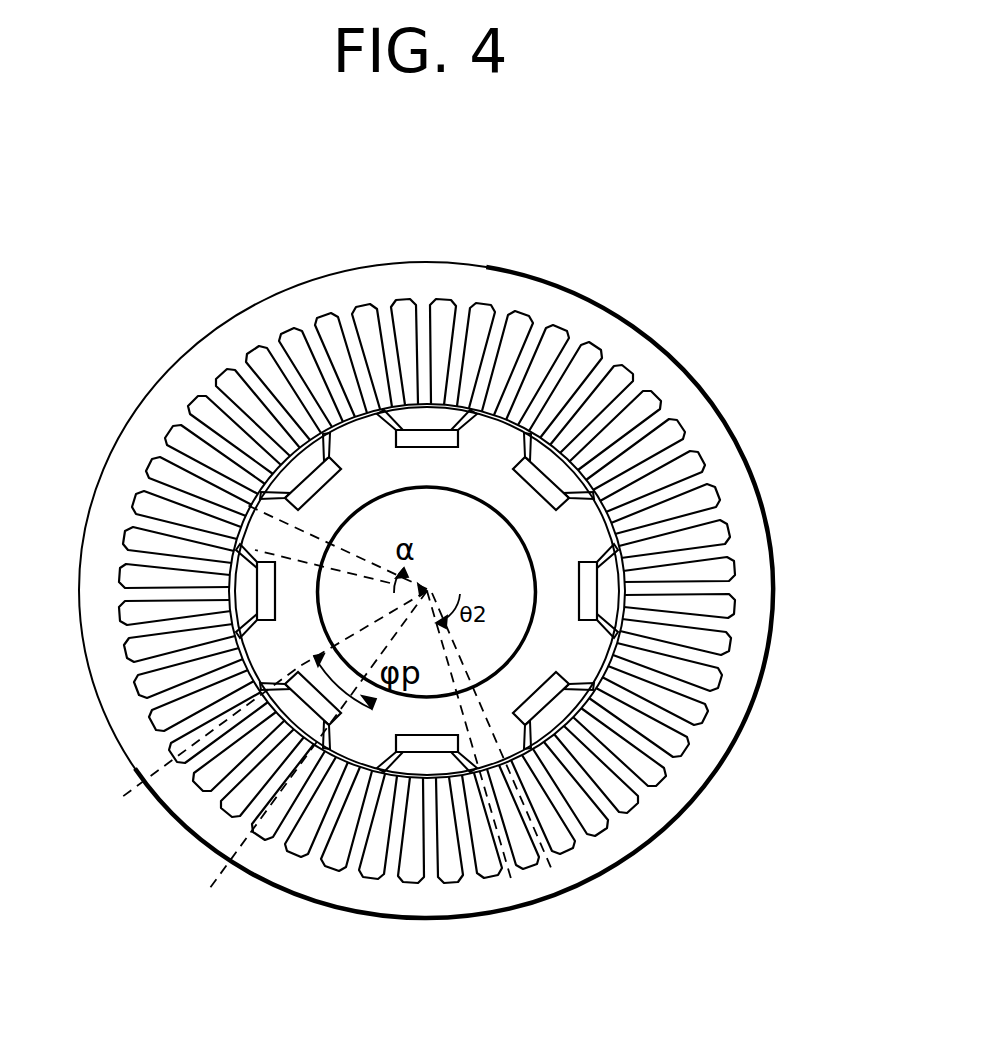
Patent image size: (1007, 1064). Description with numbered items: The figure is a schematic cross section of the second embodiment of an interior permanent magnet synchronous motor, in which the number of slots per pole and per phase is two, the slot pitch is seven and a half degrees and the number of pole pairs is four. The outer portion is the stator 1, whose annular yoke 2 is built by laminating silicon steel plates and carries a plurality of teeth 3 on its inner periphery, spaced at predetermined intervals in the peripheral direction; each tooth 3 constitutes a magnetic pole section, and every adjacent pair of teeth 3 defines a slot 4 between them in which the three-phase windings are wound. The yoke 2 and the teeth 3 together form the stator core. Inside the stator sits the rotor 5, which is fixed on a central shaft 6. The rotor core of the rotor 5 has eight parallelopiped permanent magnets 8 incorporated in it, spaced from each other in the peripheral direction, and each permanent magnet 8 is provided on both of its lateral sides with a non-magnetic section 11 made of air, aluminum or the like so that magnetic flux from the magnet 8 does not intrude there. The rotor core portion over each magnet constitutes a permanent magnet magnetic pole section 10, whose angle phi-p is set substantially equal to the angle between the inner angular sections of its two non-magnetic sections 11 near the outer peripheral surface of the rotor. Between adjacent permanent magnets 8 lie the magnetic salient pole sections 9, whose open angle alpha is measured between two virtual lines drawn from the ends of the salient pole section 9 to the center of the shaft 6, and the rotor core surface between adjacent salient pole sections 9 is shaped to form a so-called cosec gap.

The stator 1 is at (745, 606).
The annular yoke 2 is at (748, 655).
The teeth 3 is at (625, 352).
The slot 4 is at (610, 378).
The rotor 5 is at (423, 420).
The shaft 6 is at (495, 565).
The permanent magnets 8 is at (605, 478).
The magnetic salient pole sections 9 is at (503, 430).
The permanent magnet magnetic pole sections 10 is at (620, 563).
The non-magnetic section 11 is at (532, 436).